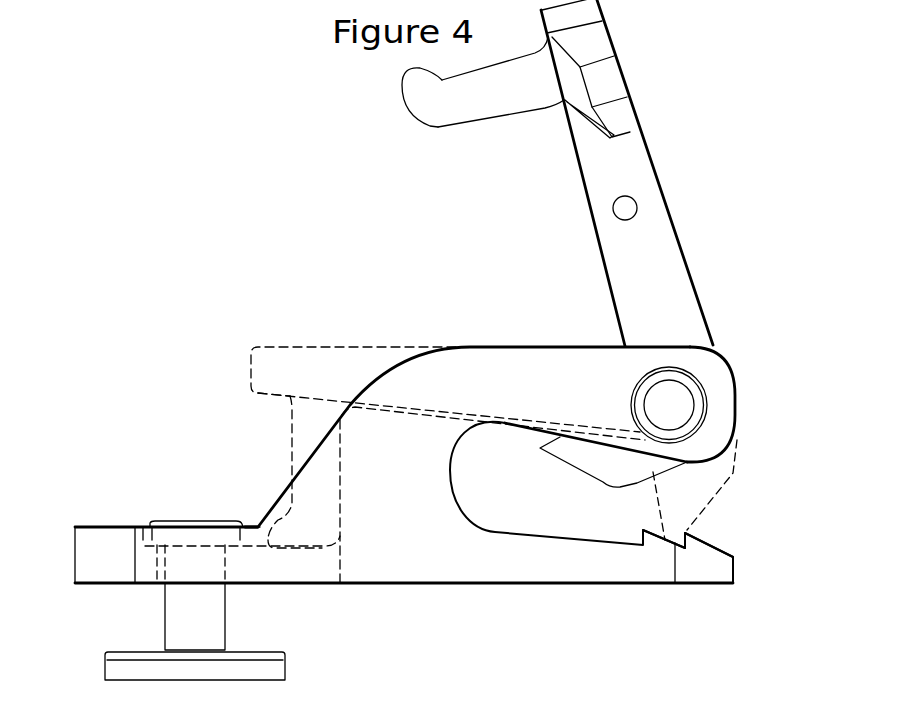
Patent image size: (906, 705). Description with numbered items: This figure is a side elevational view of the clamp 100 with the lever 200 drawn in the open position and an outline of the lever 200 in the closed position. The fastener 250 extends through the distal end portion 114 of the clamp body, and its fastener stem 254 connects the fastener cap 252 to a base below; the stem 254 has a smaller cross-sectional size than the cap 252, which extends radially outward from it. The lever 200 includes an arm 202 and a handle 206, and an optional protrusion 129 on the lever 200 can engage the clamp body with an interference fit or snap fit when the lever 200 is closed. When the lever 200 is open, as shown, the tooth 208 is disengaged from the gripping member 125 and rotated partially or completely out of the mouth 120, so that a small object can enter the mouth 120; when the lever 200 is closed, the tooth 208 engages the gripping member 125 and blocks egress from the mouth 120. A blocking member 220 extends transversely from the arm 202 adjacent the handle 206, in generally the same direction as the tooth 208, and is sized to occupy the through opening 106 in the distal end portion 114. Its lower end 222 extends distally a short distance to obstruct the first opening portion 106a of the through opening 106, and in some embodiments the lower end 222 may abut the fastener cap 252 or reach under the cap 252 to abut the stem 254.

The clamp 100 is at (112, 177).
The distal end portion 114 is at (105, 542).
The fastener cap 252 is at (185, 521).
The fastener stem 254 is at (173, 614).
The fastener 250 is at (107, 653).
The lever 200 is at (597, 243).
The arm 202 is at (623, 153).
The protrusion 129 is at (625, 208).
The handle 206 is at (588, 53).
The blocking member 220 is at (497, 97).
The lower end 222 is at (428, 97).
The through opening 106 is at (247, 522).
The first opening portion 106a is at (313, 563).
The mouth 120 is at (540, 493).
The tooth 208 is at (617, 465).
The gripping member 125 is at (695, 545).